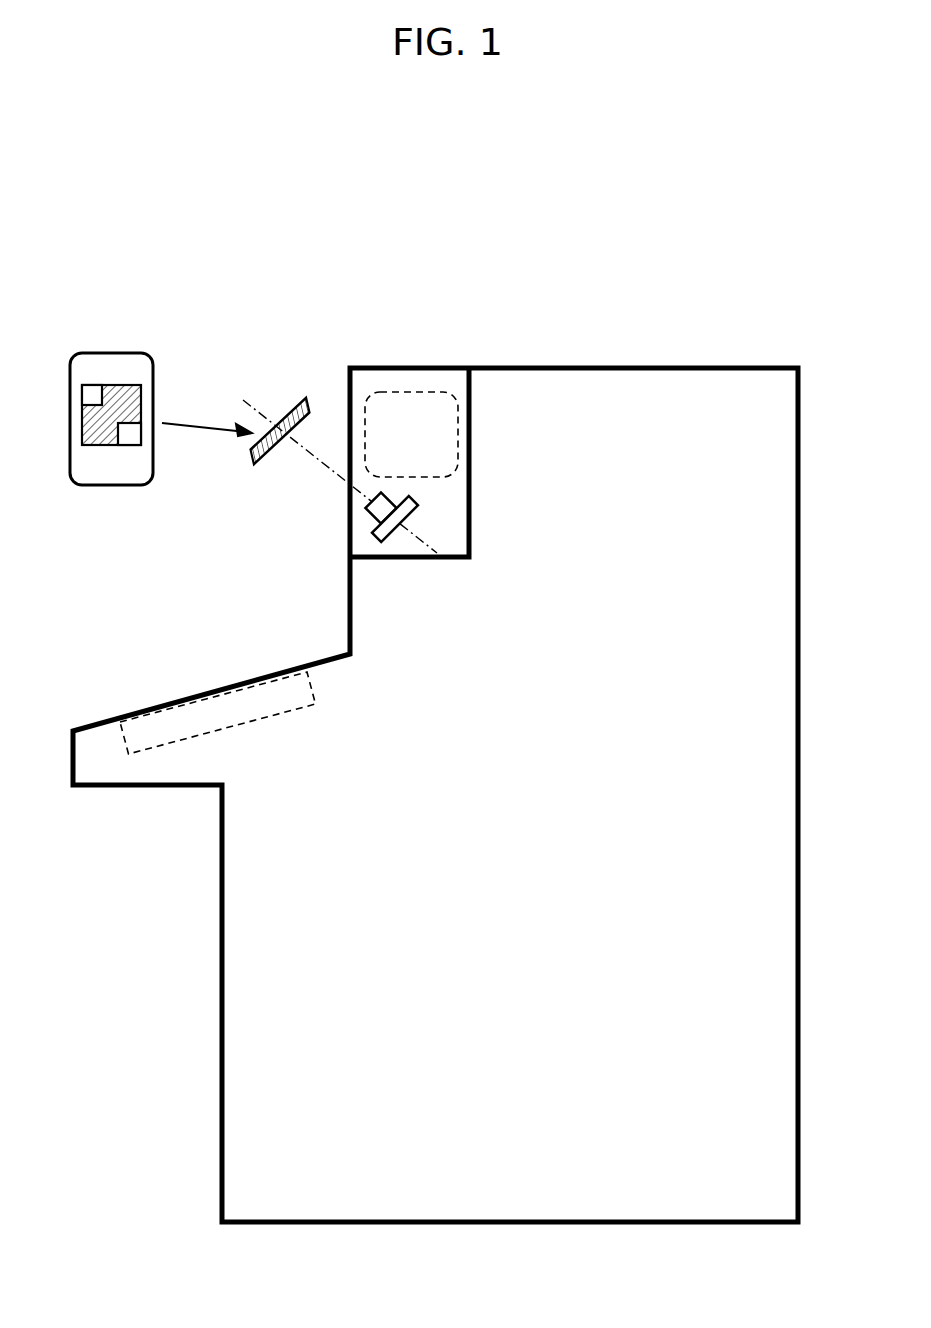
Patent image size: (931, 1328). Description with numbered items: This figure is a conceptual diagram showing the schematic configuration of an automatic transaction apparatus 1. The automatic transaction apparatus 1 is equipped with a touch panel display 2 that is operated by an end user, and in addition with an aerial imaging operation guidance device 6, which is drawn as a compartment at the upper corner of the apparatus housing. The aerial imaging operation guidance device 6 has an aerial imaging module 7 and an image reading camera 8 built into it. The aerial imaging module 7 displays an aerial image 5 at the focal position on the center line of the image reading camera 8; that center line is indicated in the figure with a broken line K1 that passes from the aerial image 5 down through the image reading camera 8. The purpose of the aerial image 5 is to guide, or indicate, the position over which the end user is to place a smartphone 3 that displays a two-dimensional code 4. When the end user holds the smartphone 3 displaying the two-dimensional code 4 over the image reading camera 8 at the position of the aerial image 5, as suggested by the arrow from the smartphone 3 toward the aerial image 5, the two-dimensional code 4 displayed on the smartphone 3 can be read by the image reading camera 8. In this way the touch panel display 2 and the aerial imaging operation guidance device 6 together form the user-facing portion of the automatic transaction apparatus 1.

The automatic transaction apparatus 1 is at (565, 367).
The touch panel display 2 is at (148, 757).
The smartphone 3 is at (100, 353).
The 2D code 4 is at (110, 447).
The aerial image 5 is at (300, 406).
The aerial imaging operation guidance device 6 is at (472, 503).
The aerial imaging module 7 is at (408, 390).
The image reading camera 8 is at (368, 523).
The broken line indicating center line of the image reading camera K1 is at (314, 460).